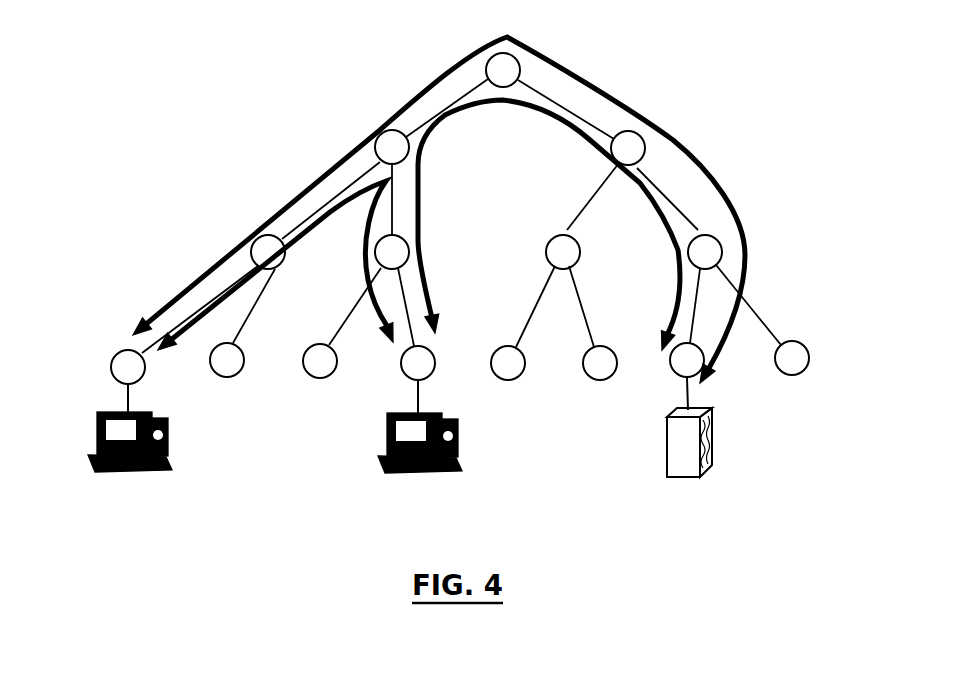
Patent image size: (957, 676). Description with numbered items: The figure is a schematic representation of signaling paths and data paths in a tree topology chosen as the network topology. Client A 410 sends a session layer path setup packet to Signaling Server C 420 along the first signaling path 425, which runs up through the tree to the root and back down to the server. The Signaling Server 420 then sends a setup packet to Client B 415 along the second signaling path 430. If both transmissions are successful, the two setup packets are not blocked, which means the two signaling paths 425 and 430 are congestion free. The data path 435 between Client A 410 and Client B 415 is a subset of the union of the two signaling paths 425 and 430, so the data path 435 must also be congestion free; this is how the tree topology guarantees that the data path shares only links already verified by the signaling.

The Client A 410 is at (128, 458).
The Client B 415 is at (425, 455).
The Signaling Server 420 is at (805, 430).
The signaling path 425 is at (728, 181).
The signaling path 430 is at (662, 183).
The data path 435 is at (210, 297).